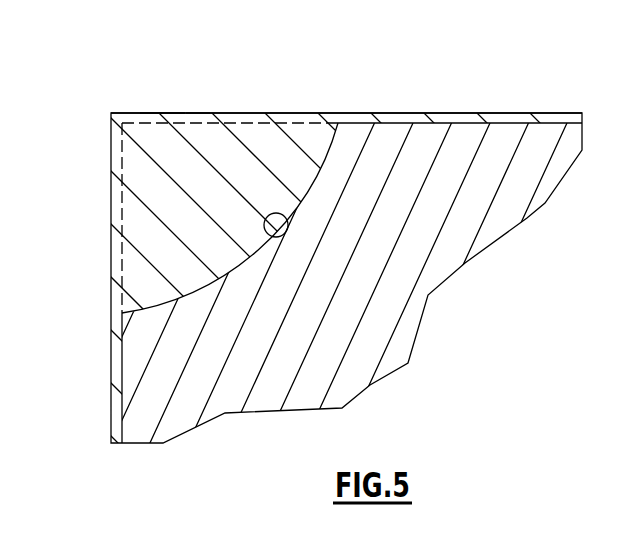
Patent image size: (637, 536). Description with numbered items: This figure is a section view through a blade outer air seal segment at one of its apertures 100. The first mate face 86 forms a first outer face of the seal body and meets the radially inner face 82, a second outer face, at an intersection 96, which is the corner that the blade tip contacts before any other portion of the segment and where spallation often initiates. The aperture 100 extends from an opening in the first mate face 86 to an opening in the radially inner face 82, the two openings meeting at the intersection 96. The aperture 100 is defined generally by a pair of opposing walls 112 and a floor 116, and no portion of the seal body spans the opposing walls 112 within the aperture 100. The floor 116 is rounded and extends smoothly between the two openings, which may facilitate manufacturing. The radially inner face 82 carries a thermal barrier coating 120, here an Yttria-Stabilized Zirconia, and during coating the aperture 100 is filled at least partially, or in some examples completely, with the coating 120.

The radially inner face 82 is at (88, 414).
The first mate face 86 is at (384, 113).
The intersection 96 is at (115, 113).
The aperture 100 is at (162, 104).
The opposing walls 112 is at (256, 150).
The floor 116 is at (287, 231).
The thermal barrier coating 120 is at (197, 113).